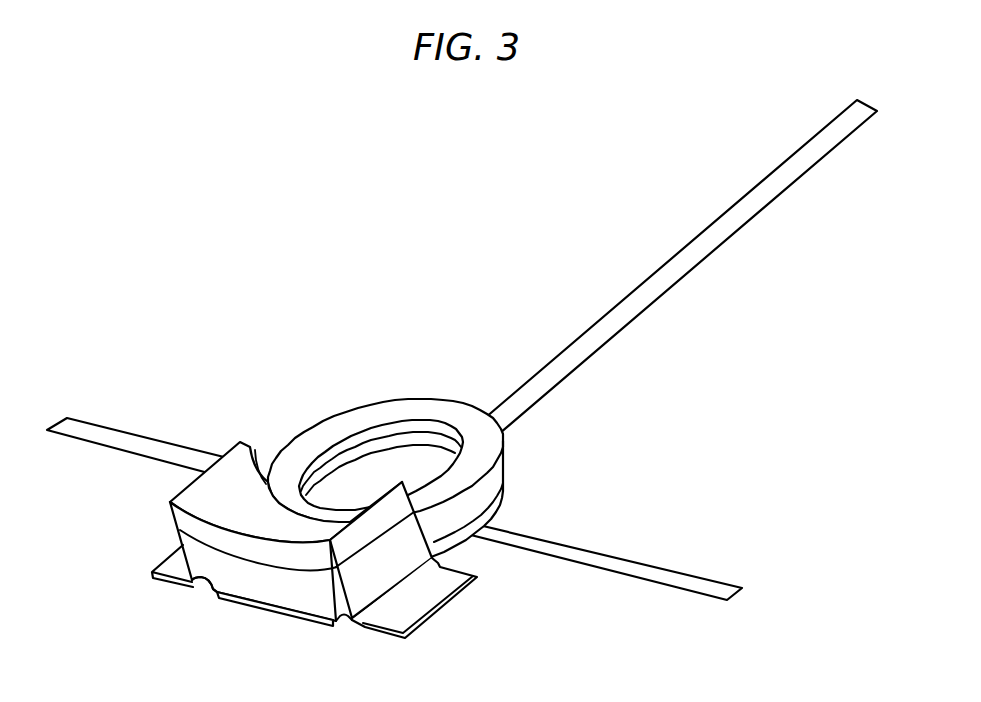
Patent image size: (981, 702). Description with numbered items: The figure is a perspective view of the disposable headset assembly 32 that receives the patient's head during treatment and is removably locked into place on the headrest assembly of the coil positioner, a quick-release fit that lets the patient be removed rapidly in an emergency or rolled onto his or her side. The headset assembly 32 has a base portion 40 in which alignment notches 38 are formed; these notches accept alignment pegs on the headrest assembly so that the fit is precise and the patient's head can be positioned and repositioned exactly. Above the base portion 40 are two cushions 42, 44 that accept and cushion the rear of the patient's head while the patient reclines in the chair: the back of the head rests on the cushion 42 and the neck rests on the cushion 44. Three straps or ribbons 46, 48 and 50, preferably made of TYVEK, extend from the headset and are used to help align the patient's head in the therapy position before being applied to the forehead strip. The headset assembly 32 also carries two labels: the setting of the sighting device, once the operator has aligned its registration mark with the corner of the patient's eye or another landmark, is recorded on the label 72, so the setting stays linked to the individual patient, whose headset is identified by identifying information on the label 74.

The disposable headset assembly 32 is at (462, 389).
The alignment notches 38 is at (204, 589).
The base portion 40 is at (277, 610).
The cushion 42 is at (374, 397).
The cushion 44 is at (200, 500).
The strap 46 is at (108, 427).
The strap 48 is at (609, 556).
The strap 50 is at (689, 241).
The label 72 is at (399, 618).
The label 74 is at (174, 568).